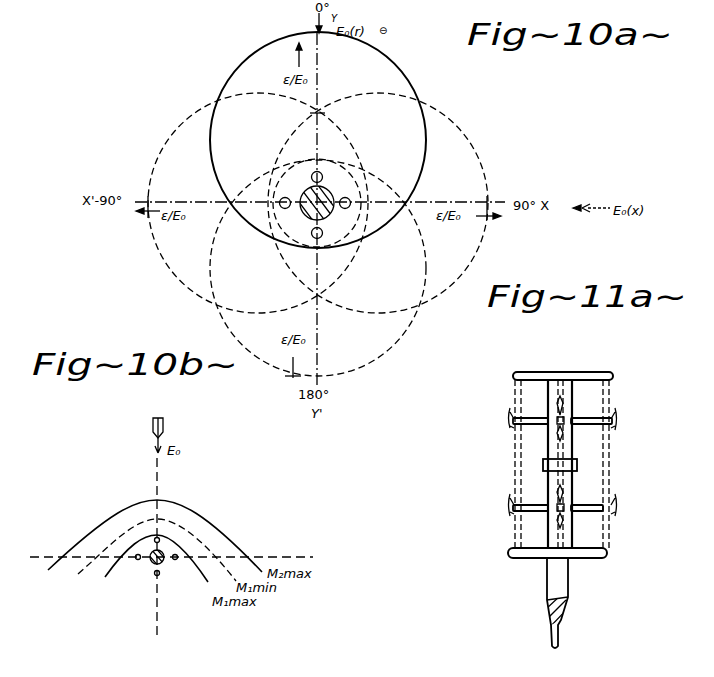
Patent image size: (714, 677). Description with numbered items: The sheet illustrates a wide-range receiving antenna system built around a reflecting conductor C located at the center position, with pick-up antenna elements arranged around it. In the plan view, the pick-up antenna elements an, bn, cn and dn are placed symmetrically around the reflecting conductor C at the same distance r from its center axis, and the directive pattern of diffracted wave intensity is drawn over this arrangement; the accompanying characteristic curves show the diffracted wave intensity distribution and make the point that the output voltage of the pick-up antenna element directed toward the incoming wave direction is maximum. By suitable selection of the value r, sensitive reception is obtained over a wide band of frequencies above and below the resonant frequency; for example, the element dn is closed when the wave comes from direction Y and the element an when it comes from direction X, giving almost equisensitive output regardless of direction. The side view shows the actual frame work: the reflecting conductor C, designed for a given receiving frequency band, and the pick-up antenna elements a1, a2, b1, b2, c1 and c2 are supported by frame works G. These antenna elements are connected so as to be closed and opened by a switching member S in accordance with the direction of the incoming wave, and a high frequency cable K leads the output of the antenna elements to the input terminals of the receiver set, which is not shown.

In FIG. 10A, the pick-up antenna element an is at (346, 212).
In FIG. 10B, the pick-up antenna element an is at (171, 565).
In FIG. 10A, the pick-up antenna element bn is at (309, 237).
In FIG. 10B, the pick-up antenna element bn is at (150, 581).
In FIG. 10A, the pick-up antenna element cn is at (283, 196).
In FIG. 10B, the pick-up antenna element cn is at (138, 551).
In FIG. 10A, the pick-up antenna element dn is at (326, 171).
In FIG. 10B, the pick-up antenna element dn is at (164, 534).
In FIG. 10A, the distance between conductor and antenna element r is at (317, 203).
In FIG. 10B, the distance between conductor and antenna element r is at (166, 547).
In FIG. 10A, the reflecting conductor C is at (325, 215).
In FIG. 10B, the reflecting conductor C is at (151, 562).
In FIG. 11A, the reflecting conductor C is at (567, 464).
In FIG. 11A, the frame work G is at (560, 465).
In FIG. 11A, the pick-up antenna element a1 is at (621, 418).
In FIG. 11A, the pick-up antenna element b1 is at (562, 413).
In FIG. 11A, the pick-up antenna element c1 is at (501, 418).
In FIG. 11A, the pick-up antenna element a2 is at (620, 505).
In FIG. 11A, the pick-up antenna element b2 is at (558, 500).
In FIG. 11A, the pick-up antenna element c2 is at (500, 505).
In FIG. 11A, the switching member S is at (553, 466).
In FIG. 11A, the high frequency cable K is at (558, 603).